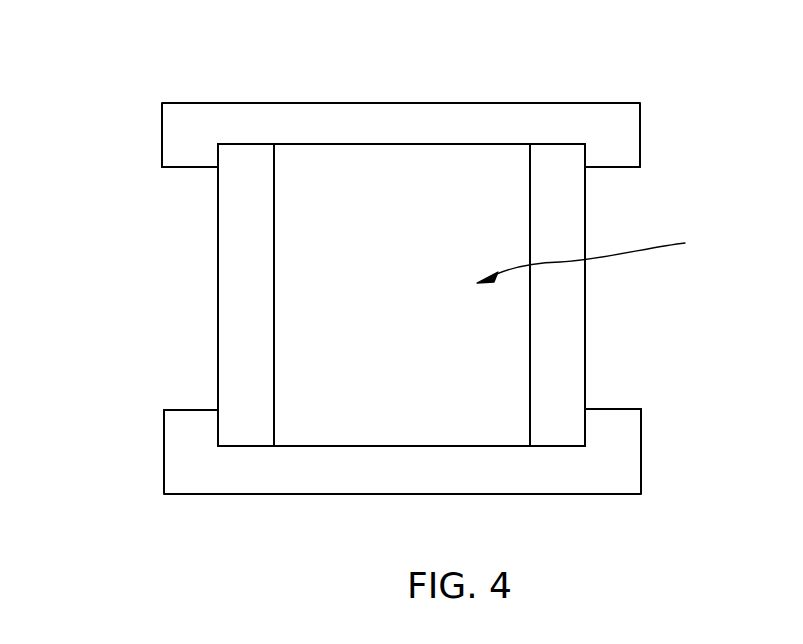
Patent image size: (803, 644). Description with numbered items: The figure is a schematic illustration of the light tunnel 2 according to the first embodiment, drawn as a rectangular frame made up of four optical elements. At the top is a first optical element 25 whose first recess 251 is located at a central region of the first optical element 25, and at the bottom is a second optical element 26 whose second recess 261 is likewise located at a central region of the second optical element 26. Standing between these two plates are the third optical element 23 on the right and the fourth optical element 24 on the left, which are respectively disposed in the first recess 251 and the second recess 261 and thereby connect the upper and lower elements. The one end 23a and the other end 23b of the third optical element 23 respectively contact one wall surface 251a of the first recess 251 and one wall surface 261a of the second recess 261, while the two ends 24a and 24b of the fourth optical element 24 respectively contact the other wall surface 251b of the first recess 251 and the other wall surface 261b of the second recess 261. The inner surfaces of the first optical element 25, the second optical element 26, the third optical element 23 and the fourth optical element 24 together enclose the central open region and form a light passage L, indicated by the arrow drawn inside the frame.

The light tunnel 2 is at (82, 76).
The third optical element 23 is at (565, 302).
The one end of the third optical element 23a is at (538, 158).
The other end of the third optical element 23b is at (537, 430).
The fourth optical element 24 is at (243, 302).
The one end of the fourth optical element 24a is at (240, 163).
The other end of the fourth optical element 24b is at (250, 427).
The first optical element 25 is at (400, 127).
The first recess 251 is at (492, 143).
The one wall surface of the first recess 251a is at (587, 156).
The other wall surface of the first recess 251b is at (216, 150).
The second optical element 26 is at (482, 473).
The second recess 261 is at (390, 448).
The one wall surface of the second recess 261a is at (585, 428).
The other wall surface of the second recess 261b is at (218, 430).
The light passage L is at (588, 257).